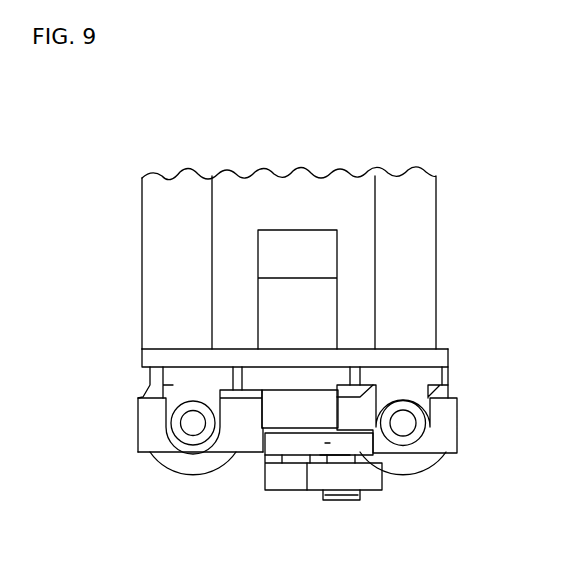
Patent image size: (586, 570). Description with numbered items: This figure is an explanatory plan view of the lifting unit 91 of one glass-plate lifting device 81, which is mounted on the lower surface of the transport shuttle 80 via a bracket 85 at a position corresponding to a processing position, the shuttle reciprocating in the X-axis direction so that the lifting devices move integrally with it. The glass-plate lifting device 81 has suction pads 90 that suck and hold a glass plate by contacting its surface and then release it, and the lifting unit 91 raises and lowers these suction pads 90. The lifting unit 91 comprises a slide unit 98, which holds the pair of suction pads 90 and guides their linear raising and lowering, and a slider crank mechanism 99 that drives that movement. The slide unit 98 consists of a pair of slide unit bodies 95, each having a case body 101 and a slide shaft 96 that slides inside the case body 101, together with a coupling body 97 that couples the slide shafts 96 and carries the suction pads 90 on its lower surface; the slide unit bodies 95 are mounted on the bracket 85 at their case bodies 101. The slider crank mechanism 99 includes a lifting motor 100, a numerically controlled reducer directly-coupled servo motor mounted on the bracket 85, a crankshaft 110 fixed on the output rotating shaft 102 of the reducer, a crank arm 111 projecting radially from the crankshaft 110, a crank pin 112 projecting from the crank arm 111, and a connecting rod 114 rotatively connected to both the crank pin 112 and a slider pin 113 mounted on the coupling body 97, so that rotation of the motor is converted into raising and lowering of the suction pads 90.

The transport shuttle 80 is at (425, 210).
The bracket 85 is at (383, 358).
The lifting unit 91 is at (398, 372).
The lifting motor 100 is at (300, 305).
The output rotating shaft 102 is at (298, 430).
The slide unit body 95 is at (173, 380).
The slide unit 98 is at (440, 392).
The coupling body 97 is at (230, 440).
The glass-plate lifting device 81 is at (141, 458).
The slider crank mechanism 99 is at (385, 475).
The suction pad 90 is at (185, 465).
The case body 101 is at (435, 447).
The slide shaft 96 is at (193, 424).
The crankshaft 110 is at (277, 445).
The slider pin 113 is at (287, 492).
The connecting rod 114 is at (338, 480).
The crank pin 112 is at (342, 497).
The crank arm 111 is at (327, 443).